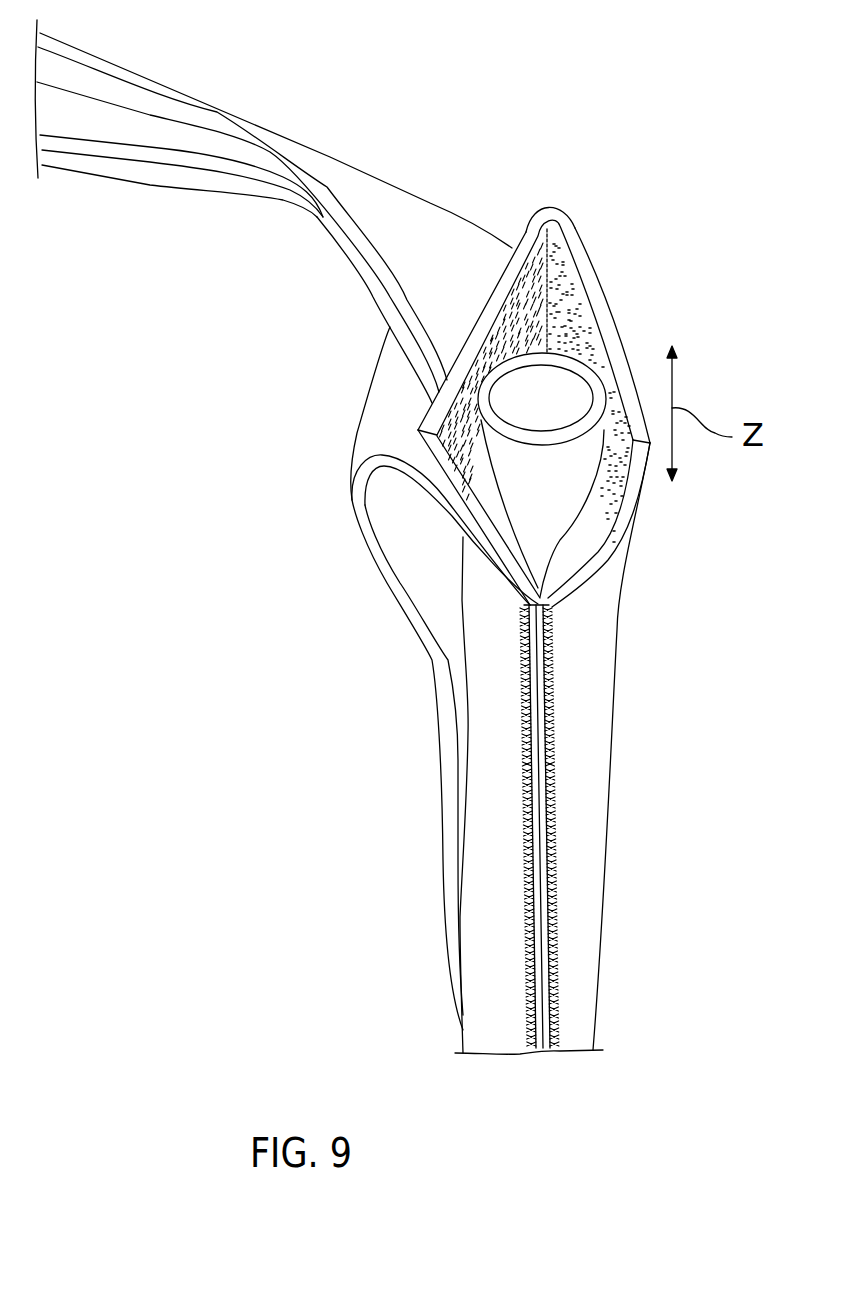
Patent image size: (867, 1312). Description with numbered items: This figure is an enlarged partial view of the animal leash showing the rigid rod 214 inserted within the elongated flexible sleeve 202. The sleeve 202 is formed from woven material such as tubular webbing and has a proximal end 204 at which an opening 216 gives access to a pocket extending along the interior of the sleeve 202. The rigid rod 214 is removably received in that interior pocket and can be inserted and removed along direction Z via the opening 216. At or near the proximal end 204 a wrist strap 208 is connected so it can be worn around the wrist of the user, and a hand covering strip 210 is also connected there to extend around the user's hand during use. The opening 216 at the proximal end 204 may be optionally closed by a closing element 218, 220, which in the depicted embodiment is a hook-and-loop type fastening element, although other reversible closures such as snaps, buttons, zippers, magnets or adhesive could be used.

The elongated flexible sleeve 202 is at (590, 705).
The proximal end 204 is at (647, 300).
The wrist strap 208 is at (277, 135).
The hand covering strip 210 is at (382, 435).
The rigid rod 214 is at (545, 503).
The opening 216 is at (551, 191).
The closing element 218 is at (570, 307).
The closing element 220 is at (523, 290).